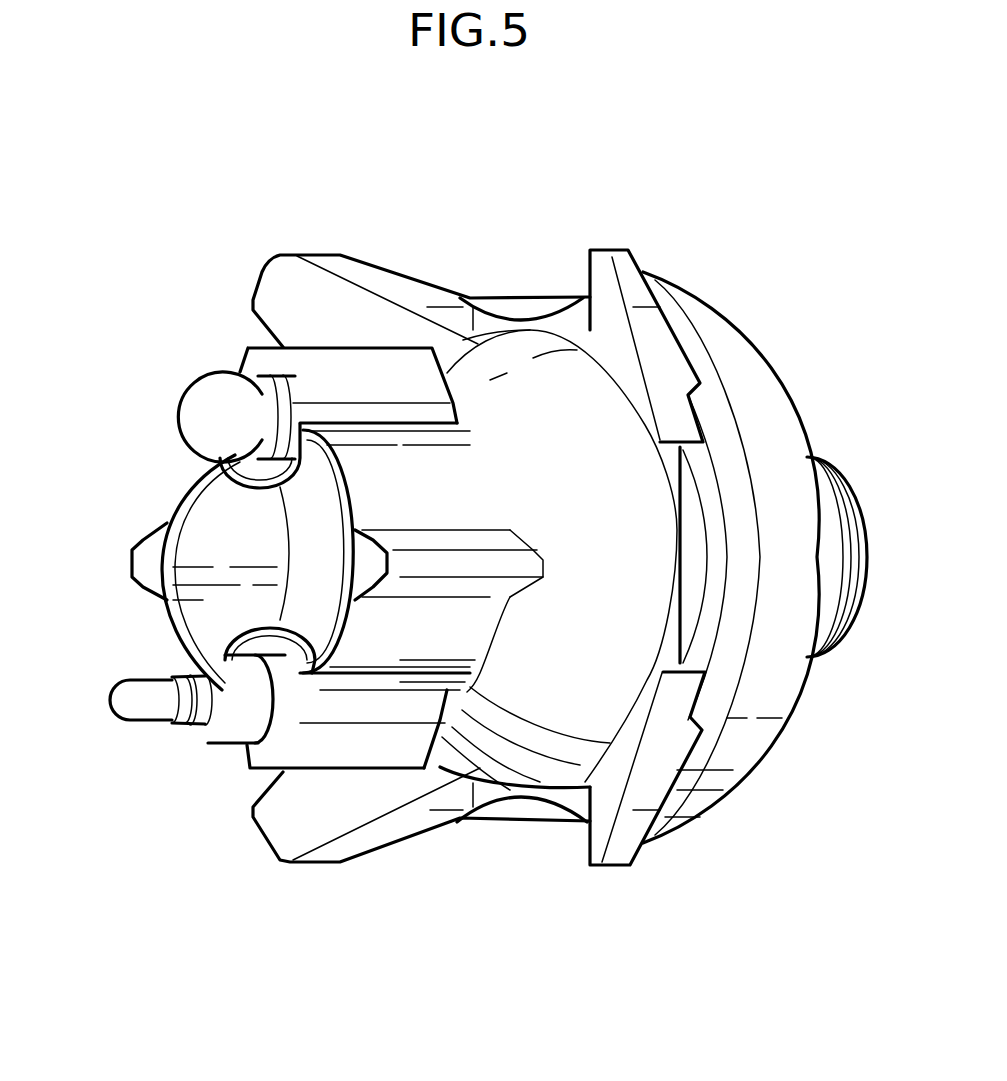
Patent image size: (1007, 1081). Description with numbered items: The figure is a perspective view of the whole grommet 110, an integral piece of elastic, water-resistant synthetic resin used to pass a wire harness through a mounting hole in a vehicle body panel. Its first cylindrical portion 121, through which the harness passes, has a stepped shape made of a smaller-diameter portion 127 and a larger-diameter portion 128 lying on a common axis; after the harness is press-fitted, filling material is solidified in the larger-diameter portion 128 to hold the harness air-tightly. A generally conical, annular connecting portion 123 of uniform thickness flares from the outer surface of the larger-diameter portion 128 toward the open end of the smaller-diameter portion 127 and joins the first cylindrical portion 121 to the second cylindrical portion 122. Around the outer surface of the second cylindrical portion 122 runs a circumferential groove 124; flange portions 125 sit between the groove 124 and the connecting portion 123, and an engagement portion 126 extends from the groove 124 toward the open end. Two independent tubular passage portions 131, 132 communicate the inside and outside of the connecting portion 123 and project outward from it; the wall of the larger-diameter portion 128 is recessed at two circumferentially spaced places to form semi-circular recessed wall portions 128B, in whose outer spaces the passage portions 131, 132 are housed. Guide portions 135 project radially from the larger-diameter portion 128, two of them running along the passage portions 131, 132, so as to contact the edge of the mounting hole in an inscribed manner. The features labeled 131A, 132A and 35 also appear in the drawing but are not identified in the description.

The grommet 110 is at (791, 272).
The first cylindrical portion 121 is at (388, 682).
The second cylindrical portion 122 is at (797, 413).
The connecting portion 123 is at (537, 747).
The groove 124 is at (727, 683).
The flange portions 125 is at (613, 262).
The engagement portion 126 is at (697, 300).
The smaller-diameter portion 127 is at (827, 653).
The larger-diameter portion 128 is at (250, 478).
The recessed wall portions 128B is at (243, 650).
The tubular passage portion 131 is at (243, 377).
The terminal pin tip 131A is at (200, 410).
The tubular passage portion 132 is at (232, 727).
The terminal pin tip 132A is at (143, 713).
The guide portions 135 is at (330, 347).
The bore 35 is at (530, 527).